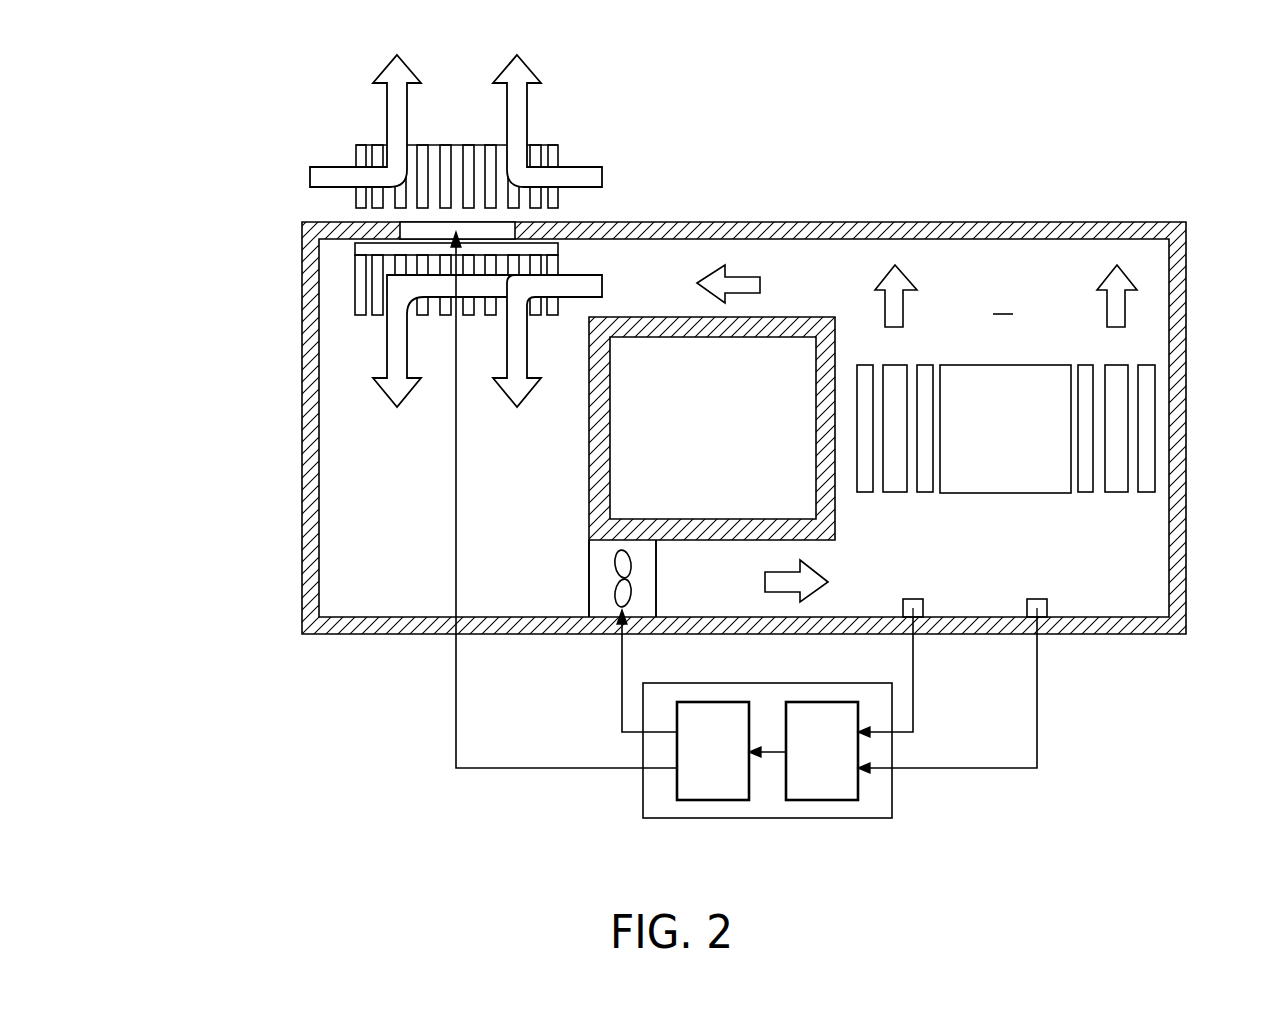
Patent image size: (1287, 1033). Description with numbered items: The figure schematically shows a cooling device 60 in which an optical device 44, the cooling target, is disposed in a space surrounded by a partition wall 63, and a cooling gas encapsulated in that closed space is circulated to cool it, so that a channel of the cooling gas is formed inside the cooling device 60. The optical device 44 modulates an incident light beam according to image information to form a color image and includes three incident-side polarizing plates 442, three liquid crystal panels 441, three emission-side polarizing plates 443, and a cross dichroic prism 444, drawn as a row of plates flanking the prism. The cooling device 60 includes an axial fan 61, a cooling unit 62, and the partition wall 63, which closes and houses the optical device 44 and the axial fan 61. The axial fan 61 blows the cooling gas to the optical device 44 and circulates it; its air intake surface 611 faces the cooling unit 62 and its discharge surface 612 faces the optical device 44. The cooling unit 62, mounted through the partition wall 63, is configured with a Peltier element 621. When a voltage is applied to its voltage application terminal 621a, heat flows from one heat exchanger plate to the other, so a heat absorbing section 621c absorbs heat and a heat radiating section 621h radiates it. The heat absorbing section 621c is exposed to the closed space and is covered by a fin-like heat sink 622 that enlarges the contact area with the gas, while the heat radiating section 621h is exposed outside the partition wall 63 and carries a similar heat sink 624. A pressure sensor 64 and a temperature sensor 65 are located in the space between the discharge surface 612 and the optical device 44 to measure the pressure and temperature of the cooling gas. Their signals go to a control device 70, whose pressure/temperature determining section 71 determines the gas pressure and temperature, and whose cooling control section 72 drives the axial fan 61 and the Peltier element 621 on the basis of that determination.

The cooling device 60 is at (1083, 188).
The partition wall 63 is at (1186, 432).
The cooling unit 62 is at (132, 107).
The Peltier element 621 is at (212, 160).
The heat radiating section 621h is at (432, 220).
The voltage application terminal 621a is at (408, 227).
The heat absorbing section 621c is at (400, 262).
The heat sink 622 is at (362, 290).
The heat sink 624 is at (362, 153).
The axial fan 61 is at (609, 568).
The air intake surface 611 is at (589, 580).
The discharge surface 612 is at (656, 580).
The optical device 44 is at (1002, 488).
The liquid crystal panel 441 is at (900, 478).
The incident-side polarizing plate 442 is at (865, 487).
The emission-side polarizing plate 443 is at (928, 487).
The cross dichroic prism 444 is at (988, 478).
The pressure sensor 64 is at (923, 606).
The temperature sensor 65 is at (1048, 606).
The control device 70 is at (671, 563).
The pressure/temperature determining section 71 is at (824, 775).
The cooling control section 72 is at (712, 775).